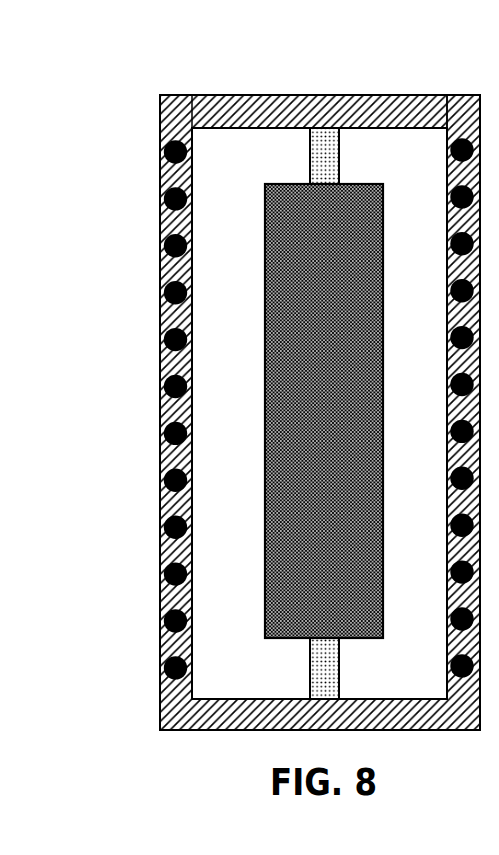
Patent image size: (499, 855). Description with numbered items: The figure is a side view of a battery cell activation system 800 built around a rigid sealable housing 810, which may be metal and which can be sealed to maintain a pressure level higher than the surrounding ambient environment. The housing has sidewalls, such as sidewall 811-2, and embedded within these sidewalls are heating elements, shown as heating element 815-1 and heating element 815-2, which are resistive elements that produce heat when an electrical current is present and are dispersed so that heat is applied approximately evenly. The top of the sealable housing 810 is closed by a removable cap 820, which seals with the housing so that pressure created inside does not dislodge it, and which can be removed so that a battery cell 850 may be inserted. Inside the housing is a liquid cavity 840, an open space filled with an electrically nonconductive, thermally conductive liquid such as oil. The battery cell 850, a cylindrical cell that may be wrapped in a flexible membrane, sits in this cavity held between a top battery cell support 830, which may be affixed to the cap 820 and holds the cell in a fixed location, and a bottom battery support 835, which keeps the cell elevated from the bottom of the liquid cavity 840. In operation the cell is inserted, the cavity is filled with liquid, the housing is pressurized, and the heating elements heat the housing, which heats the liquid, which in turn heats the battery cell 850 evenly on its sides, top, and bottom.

The battery cell activation system 800 is at (81, 92).
The sealable housing 810 is at (269, 76).
The sidewall 811-2 is at (457, 104).
The heating element 815-1 is at (163, 160).
The heating element 815-2 is at (162, 211).
The cap 820 is at (209, 104).
The top battery cell support 830 is at (310, 157).
The bottom battery support 835 is at (309, 662).
The liquid cavity 840 is at (406, 637).
The battery cell 850 is at (265, 263).